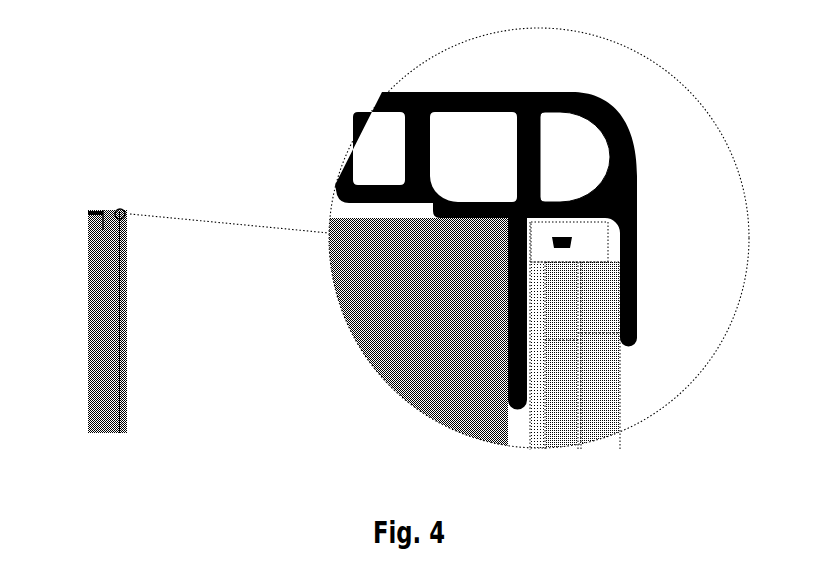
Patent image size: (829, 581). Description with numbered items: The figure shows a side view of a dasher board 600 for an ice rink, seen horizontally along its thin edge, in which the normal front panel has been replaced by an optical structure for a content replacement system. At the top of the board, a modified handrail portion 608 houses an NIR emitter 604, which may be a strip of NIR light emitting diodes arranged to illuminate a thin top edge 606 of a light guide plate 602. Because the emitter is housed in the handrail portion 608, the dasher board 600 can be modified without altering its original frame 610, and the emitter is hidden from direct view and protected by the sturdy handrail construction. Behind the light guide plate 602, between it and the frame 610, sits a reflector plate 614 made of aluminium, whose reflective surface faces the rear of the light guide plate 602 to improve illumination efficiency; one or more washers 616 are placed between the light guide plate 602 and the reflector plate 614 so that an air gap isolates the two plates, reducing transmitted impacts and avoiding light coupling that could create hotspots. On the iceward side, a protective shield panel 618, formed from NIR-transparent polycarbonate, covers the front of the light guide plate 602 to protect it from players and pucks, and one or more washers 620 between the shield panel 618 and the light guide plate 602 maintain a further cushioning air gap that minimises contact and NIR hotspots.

The dasher board 600 is at (100, 210).
The light guide plate 602 is at (563, 308).
The NIR emitter 604 is at (642, 195).
The top edge 606 is at (558, 252).
The handrail portion 608 is at (627, 132).
The frame 610 is at (118, 283).
The reflector plate 614 is at (537, 407).
The washers 616 is at (548, 360).
The protective shield panel 618 is at (592, 307).
The washers 620 is at (575, 378).